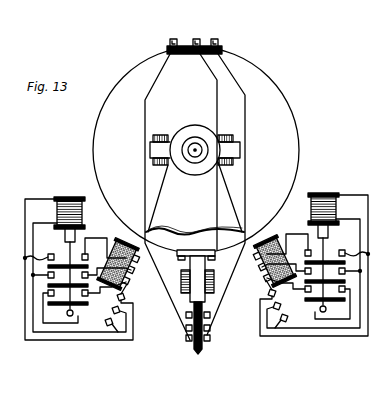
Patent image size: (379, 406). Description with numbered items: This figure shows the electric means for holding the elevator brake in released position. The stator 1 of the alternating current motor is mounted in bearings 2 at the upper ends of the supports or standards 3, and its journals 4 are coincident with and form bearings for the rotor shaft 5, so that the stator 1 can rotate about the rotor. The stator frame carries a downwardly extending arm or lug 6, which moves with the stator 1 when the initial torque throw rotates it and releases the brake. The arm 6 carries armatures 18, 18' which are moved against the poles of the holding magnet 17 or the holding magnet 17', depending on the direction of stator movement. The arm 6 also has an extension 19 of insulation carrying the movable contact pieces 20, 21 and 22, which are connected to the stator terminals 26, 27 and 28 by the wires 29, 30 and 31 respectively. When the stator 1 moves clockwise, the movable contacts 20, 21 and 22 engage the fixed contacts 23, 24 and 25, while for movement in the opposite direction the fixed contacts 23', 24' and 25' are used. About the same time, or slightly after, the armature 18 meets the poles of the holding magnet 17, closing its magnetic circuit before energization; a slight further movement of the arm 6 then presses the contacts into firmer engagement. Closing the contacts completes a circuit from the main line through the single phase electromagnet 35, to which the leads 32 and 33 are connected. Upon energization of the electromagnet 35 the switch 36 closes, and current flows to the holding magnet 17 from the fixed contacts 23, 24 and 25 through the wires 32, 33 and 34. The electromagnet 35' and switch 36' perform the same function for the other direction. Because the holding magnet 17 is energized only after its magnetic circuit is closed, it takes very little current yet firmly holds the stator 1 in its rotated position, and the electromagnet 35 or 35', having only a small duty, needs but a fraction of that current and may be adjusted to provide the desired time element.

The stator 1 is at (277, 113).
The bearings 2 is at (182, 132).
The supports or standards 3 is at (222, 190).
The journals 4 is at (190, 137).
The rotor shaft 5 is at (196, 149).
The arm or lug 6 is at (192, 260).
The holding magnet 17 is at (120, 242).
The holding magnet 17' is at (273, 231).
The armature 18 is at (175, 281).
The armature 18' is at (223, 272).
The extension of insulation 19 is at (198, 347).
The movable contact piece 20 is at (187, 313).
The movable contact piece 21 is at (187, 327).
The movable contact piece 22 is at (187, 340).
The fixed contact 23 is at (134, 292).
The fixed contact 23' is at (288, 297).
The fixed contact 24 is at (103, 307).
The fixed contact 24' is at (261, 301).
The fixed contact 25 is at (100, 322).
The fixed contact 25' is at (288, 333).
The stator terminal 26 is at (197, 40).
The stator terminal 27 is at (215, 40).
The stator terminal 28 is at (174, 40).
The wire 29 is at (213, 68).
The wire 30 is at (238, 82).
The wire 31 is at (158, 78).
The lead 32 is at (77, 279).
The lead 33 is at (79, 295).
The wire 34 is at (60, 282).
The single phase electromagnet 35 is at (69, 206).
The electromagnet 35' is at (331, 200).
The switch 36 is at (85, 269).
The switch 36' is at (307, 262).